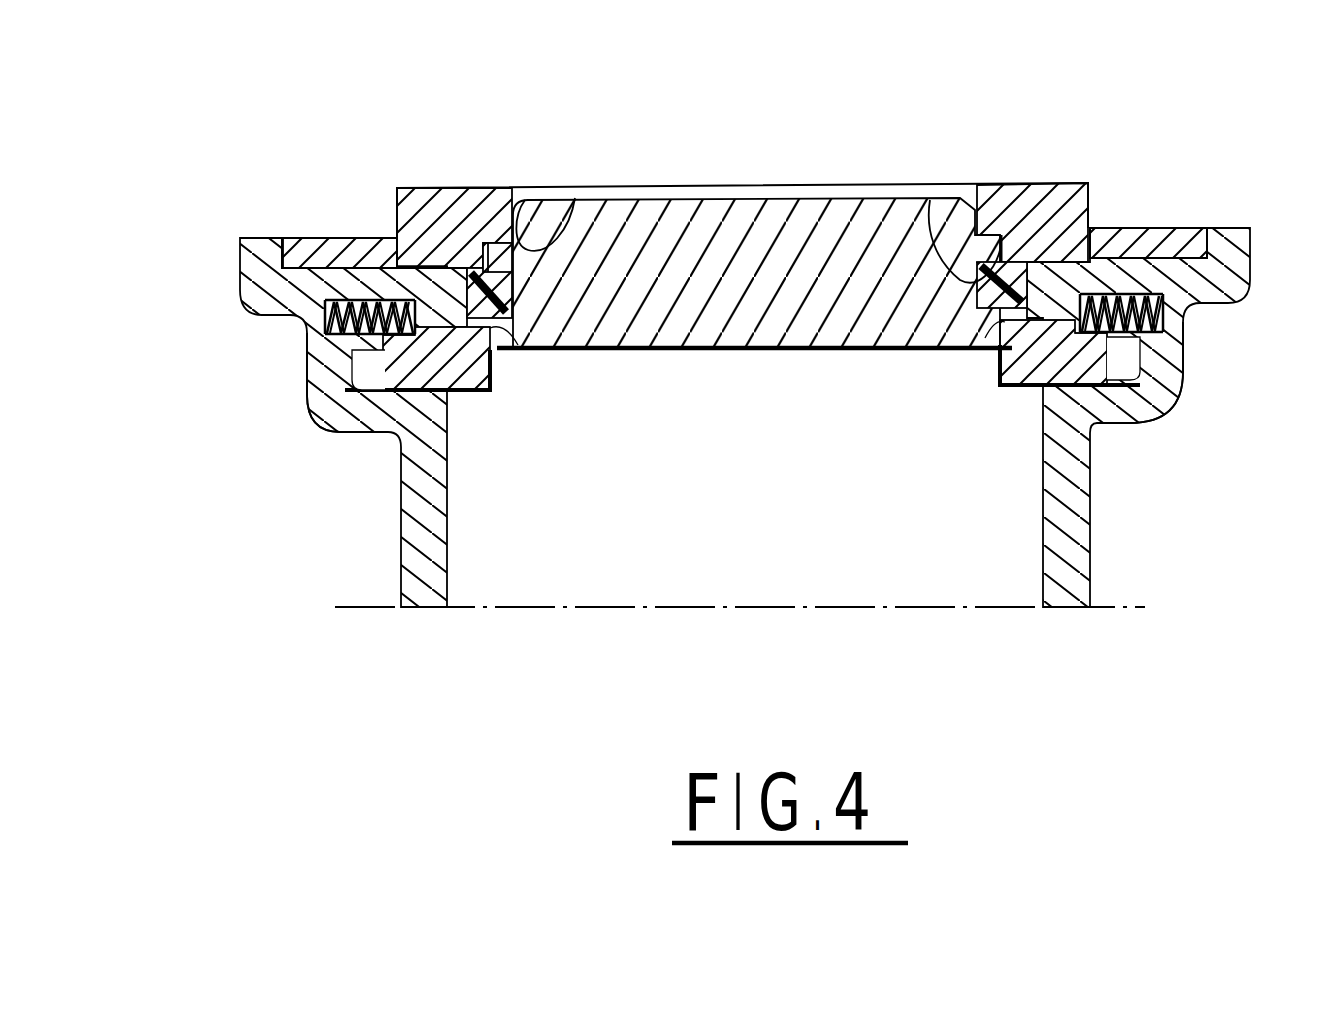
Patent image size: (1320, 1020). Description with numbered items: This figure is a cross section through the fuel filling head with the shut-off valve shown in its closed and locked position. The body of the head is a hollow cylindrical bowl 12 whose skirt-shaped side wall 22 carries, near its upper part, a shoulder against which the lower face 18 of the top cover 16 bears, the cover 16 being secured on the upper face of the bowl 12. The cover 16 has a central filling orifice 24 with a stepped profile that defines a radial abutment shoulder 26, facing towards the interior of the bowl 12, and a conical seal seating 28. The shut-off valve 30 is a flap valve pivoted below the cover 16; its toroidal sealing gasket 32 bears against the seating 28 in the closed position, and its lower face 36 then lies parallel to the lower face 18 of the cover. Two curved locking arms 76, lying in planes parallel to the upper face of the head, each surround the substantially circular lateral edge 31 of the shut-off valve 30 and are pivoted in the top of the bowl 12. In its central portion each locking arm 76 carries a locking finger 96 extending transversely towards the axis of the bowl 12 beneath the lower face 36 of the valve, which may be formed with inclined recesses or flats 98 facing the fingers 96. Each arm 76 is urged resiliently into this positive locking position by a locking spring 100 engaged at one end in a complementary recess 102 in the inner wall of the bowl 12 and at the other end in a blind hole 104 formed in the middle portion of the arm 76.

The hollow cylindrical bowl 12 is at (1098, 548).
The top cover 16 is at (1166, 222).
The lower face of the cover 18 is at (1190, 310).
The skirt-shaped side wall 22 is at (1187, 373).
The central filling orifice 24 is at (527, 188).
The radial abutment shoulder 26 is at (575, 198).
The conical seal seating 28 is at (478, 300).
The shut-off valve 30 is at (851, 175).
The lateral edge of the shut-off valve 31 is at (1020, 327).
The toroidal sealing gasket 32 is at (930, 200).
The lower face of the shut-off valve 36 is at (800, 353).
The locking arm 76 is at (310, 393).
The locking finger 96 is at (493, 392).
The inclined recess or flat 98 is at (517, 350).
The locking spring 100 is at (367, 300).
The complementary recess 102 is at (307, 337).
The blind hole 104 is at (467, 395).